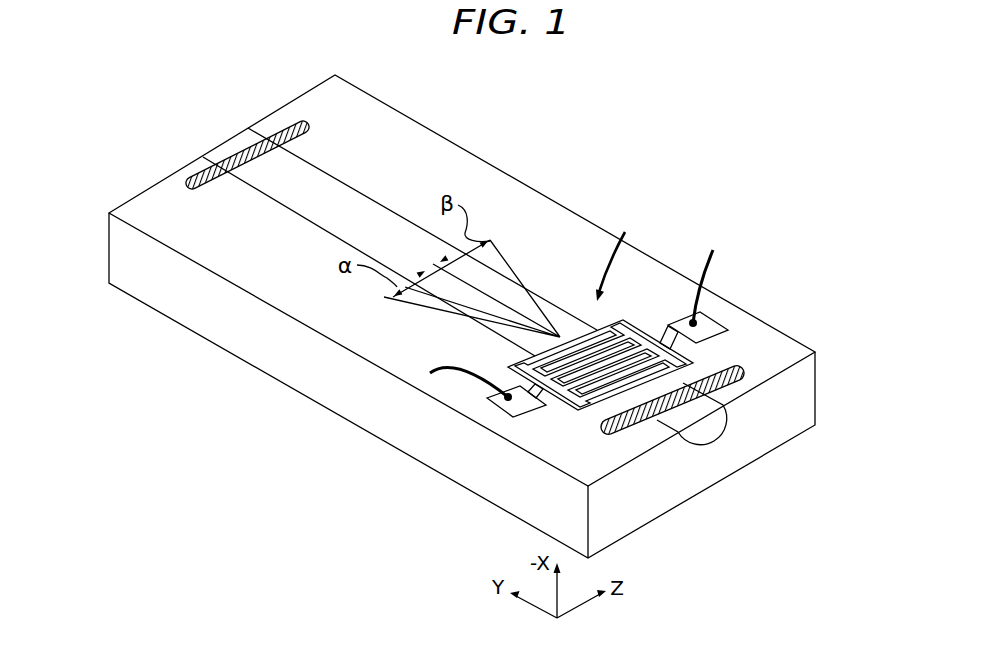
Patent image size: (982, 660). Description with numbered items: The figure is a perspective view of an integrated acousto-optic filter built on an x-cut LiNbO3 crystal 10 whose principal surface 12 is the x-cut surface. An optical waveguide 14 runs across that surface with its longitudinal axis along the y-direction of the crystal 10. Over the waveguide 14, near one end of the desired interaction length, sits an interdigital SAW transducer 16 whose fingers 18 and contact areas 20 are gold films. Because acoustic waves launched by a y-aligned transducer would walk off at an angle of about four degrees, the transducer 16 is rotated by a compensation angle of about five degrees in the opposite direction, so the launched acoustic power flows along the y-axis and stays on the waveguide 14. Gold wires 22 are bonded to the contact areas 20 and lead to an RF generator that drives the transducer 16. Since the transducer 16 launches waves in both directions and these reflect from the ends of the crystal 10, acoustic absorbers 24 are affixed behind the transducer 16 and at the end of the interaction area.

The LiNbO3 crystal 10 is at (220, 318).
The principal surface 12 is at (490, 200).
The optical waveguide 14 is at (337, 193).
The interdigital SAW transducer 16 is at (626, 250).
The fingers 18 is at (707, 345).
The contact areas 20 is at (668, 325).
The gold wires 22 is at (713, 252).
The acoustic absorbers 24 is at (238, 148).